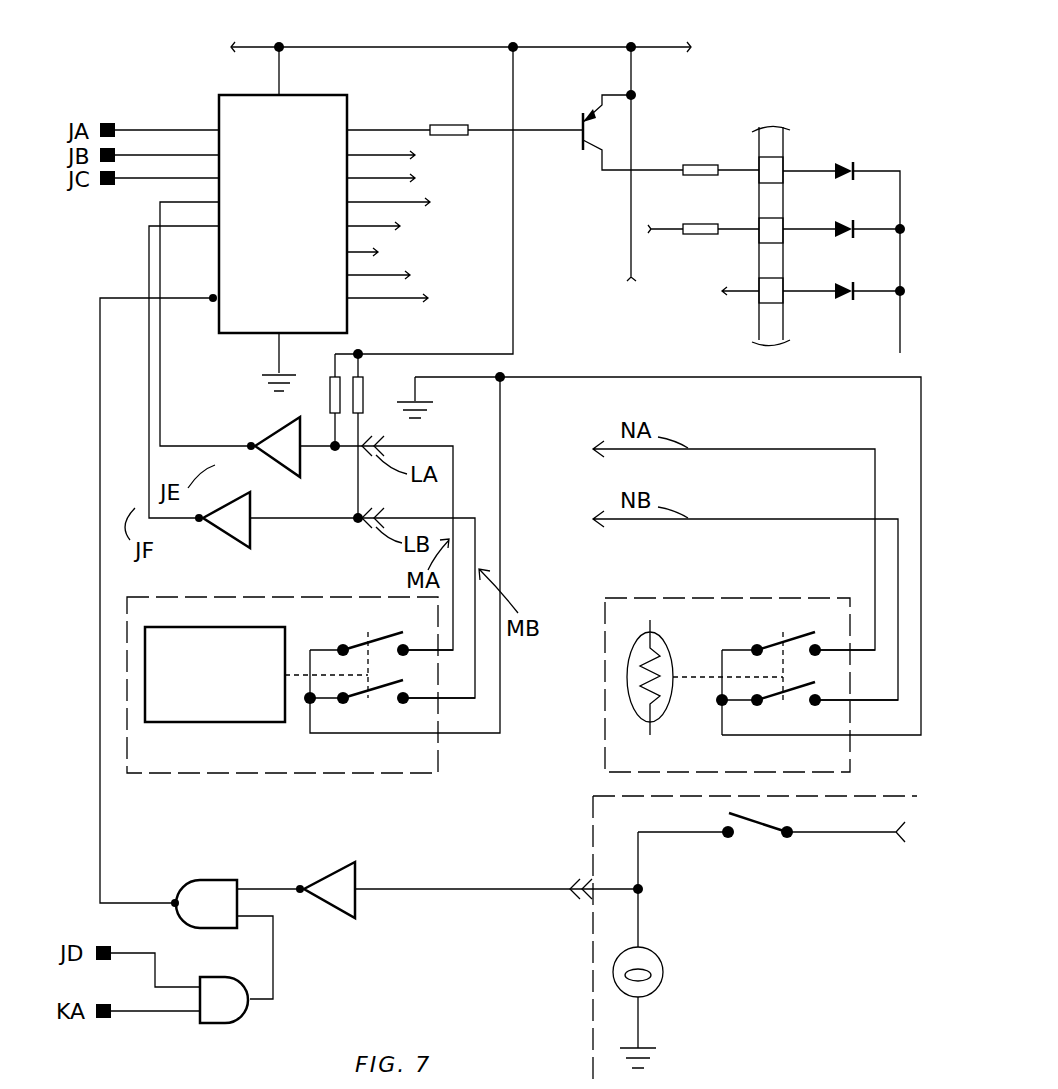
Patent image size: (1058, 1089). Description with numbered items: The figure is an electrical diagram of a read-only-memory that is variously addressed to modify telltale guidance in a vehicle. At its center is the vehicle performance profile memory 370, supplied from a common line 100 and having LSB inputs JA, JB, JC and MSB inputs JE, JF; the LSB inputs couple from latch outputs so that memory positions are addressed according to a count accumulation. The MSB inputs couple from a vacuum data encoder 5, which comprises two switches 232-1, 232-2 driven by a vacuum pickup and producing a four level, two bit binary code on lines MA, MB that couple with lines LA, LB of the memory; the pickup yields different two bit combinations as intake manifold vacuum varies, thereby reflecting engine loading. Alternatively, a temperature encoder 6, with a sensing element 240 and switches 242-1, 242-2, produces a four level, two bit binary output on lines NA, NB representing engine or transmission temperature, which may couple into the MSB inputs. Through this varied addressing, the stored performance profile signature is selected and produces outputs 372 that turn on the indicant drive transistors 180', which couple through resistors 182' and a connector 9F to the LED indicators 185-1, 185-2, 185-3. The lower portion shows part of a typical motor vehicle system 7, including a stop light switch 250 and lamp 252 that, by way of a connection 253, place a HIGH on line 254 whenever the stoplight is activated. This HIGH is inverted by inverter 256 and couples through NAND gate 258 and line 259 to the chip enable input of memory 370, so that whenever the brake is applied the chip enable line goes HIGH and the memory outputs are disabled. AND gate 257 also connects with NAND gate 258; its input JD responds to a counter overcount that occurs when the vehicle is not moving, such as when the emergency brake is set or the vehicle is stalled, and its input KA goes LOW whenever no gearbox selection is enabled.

The power supply line 100 is at (486, 45).
The vehicle performance profile memory 370 is at (342, 106).
The outputs 372 is at (407, 121).
The indicant drive transistor 180' is at (609, 115).
The resistor 182' is at (703, 167).
The connector 9F is at (786, 132).
The LED indicator 185-1 is at (856, 166).
The diode 185-2 is at (870, 212).
The diode 185-3 is at (866, 274).
The line 259 is at (100, 325).
The vacuum data encoder 5 is at (301, 666).
The switch 232-1 is at (372, 645).
The switch 232-2 is at (388, 690).
The temperature encoder 6 is at (723, 667).
The sensing element 240 is at (632, 681).
The switch 242-1 is at (770, 644).
The switch 242-2 is at (800, 690).
The stop light switch 250 is at (776, 810).
The lamp 252 is at (660, 954).
The connection 253 is at (576, 919).
The line 254 is at (418, 887).
The inverter 256 is at (322, 884).
The AND gate 257 is at (227, 1013).
The NAND gate 258 is at (228, 894).
The motor vehicle system 7 is at (765, 936).